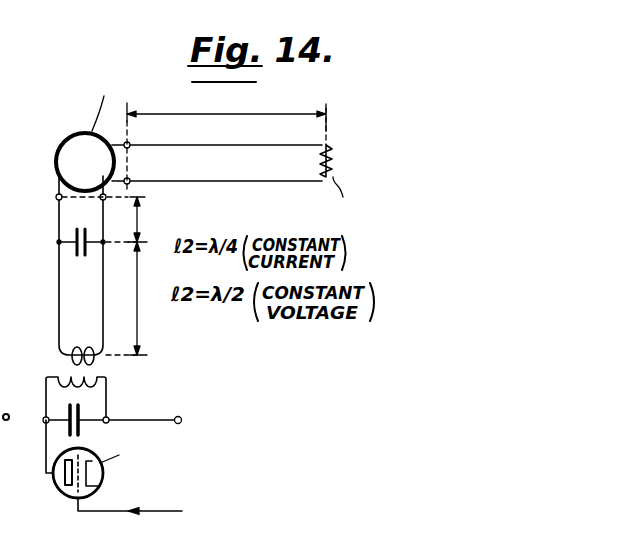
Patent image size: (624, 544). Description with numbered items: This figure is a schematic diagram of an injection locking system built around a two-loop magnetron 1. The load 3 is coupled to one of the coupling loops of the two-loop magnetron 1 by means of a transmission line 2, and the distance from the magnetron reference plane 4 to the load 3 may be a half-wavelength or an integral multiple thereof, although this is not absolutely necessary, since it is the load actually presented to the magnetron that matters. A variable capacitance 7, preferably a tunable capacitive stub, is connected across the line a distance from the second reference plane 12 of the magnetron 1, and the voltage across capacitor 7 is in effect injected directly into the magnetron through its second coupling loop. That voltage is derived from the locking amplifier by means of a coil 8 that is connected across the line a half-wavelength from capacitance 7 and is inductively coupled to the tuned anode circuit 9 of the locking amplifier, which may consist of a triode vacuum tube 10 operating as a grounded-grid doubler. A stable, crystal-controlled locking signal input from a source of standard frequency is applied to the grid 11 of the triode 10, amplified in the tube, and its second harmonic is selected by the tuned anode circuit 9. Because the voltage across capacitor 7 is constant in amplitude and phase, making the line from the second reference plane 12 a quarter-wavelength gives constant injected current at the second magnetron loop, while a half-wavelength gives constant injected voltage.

The two-loop magnetron 1 is at (74, 136).
The transmission line 2 is at (204, 150).
The load 3 is at (319, 165).
The magnetron reference plane 4 is at (131, 172).
The variable capacitance 7 is at (76, 257).
The coil 8 is at (84, 347).
The tuned anode circuit 9 is at (85, 399).
The triode vacuum tube 10 is at (103, 489).
The grid 11 is at (74, 486).
The second reference plane 12 is at (77, 199).